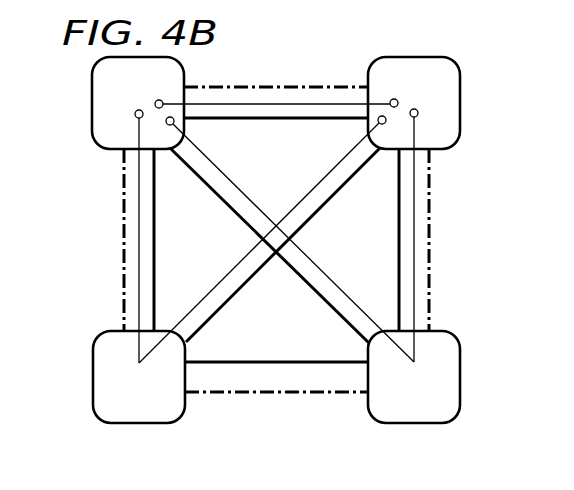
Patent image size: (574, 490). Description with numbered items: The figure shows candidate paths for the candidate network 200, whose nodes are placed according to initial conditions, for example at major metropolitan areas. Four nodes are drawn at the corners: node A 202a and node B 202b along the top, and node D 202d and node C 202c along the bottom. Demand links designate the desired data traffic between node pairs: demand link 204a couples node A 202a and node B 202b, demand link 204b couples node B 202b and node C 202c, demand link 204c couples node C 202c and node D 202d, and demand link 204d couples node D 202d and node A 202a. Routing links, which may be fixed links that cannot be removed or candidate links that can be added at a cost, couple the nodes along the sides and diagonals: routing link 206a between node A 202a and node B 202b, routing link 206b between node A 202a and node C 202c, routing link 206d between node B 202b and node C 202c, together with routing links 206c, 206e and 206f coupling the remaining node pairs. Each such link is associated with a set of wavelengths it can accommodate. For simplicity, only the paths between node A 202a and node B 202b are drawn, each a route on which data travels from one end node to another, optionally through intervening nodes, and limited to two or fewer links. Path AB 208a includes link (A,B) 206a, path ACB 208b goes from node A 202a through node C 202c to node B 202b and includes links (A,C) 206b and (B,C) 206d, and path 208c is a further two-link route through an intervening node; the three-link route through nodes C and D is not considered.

The candidate network 200 is at (80, 193).
The node A 202a is at (92, 100).
The node B 202b is at (410, 57).
The node C 202c is at (457, 331).
The node D 202d is at (93, 380).
The demand link (A,B) 204a is at (331, 86).
The demand link 204b is at (432, 237).
The demand link 204c is at (333, 396).
The demand link 204d is at (122, 240).
The routing link (A,B) 206a is at (268, 120).
The routing link (A,C) 206b is at (205, 185).
The routing link 206c is at (223, 313).
The routing link (B,C) 206d is at (398, 245).
The routing link 206e is at (292, 360).
The routing link 206f is at (158, 243).
The path AB 208a is at (277, 101).
The path ACB 208b is at (367, 277).
The path 208c is at (333, 167).